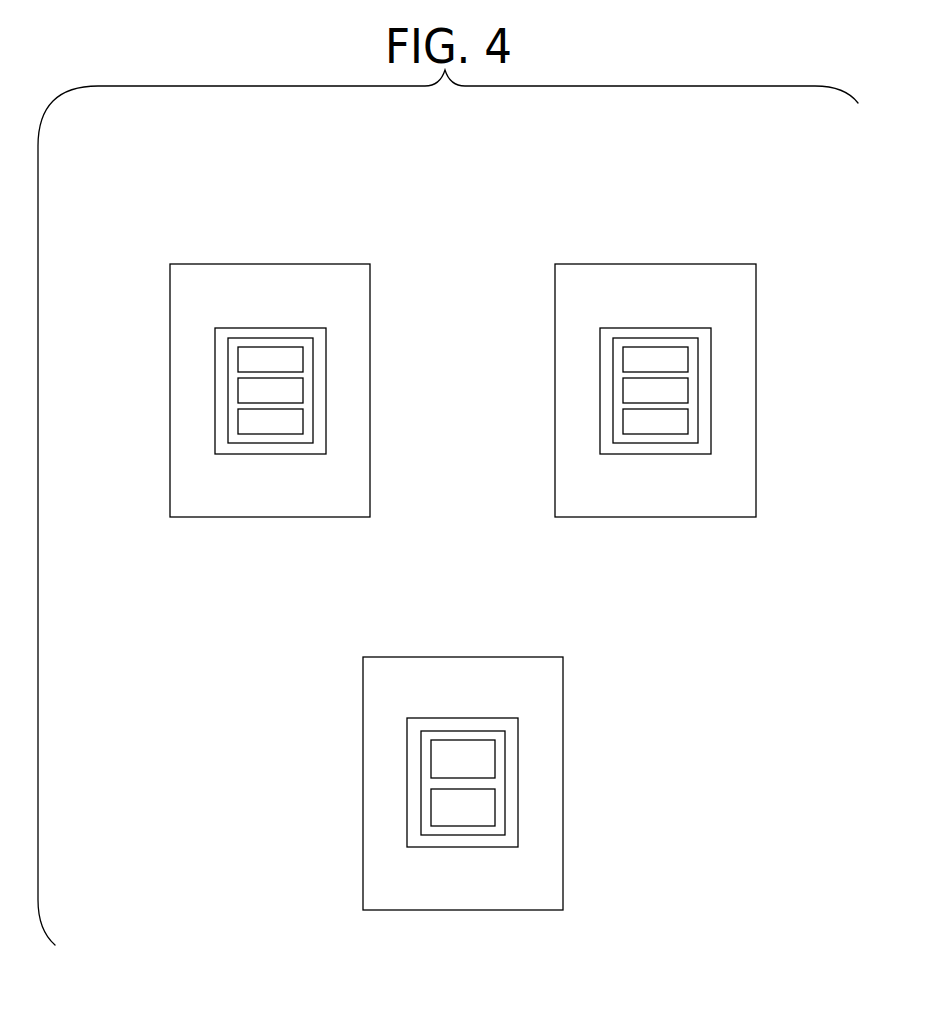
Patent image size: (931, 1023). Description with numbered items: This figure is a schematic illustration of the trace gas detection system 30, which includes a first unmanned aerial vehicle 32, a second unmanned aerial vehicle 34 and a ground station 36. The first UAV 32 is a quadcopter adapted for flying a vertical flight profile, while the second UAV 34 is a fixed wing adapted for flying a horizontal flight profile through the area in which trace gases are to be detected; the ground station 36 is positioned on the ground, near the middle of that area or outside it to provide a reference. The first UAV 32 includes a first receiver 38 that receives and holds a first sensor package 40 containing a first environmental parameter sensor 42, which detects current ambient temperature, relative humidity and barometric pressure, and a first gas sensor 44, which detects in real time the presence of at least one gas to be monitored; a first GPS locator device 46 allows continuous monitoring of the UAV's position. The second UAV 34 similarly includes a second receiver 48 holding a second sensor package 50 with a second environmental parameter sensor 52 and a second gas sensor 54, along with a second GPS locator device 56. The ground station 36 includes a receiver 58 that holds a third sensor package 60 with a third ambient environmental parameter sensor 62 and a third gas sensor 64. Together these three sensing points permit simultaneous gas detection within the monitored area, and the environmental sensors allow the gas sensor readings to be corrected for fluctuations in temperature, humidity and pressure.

The trace gas detection system 30 is at (603, 190).
The first unmanned aerial vehicle 32 is at (170, 340).
The second unmanned aerial vehicle 34 is at (756, 340).
The ground station 36 is at (563, 732).
The first receiver 38 is at (215, 433).
The first sensor package 40 is at (228, 384).
The first environmental parameter sensor 42 is at (303, 358).
The first gas sensor 44 is at (295, 392).
The first GPS locator device 46 is at (293, 423).
The second receiver 48 is at (711, 433).
The second sensor package 50 is at (698, 384).
The second environmental parameter sensor 52 is at (628, 358).
The second gas sensor 54 is at (630, 393).
The second GPS locator device 56 is at (633, 421).
The receiver 58 is at (518, 827).
The third sensor package 60 is at (505, 776).
The third ambient environmental parameter sensor 62 is at (438, 757).
The third gas sensor 64 is at (440, 815).